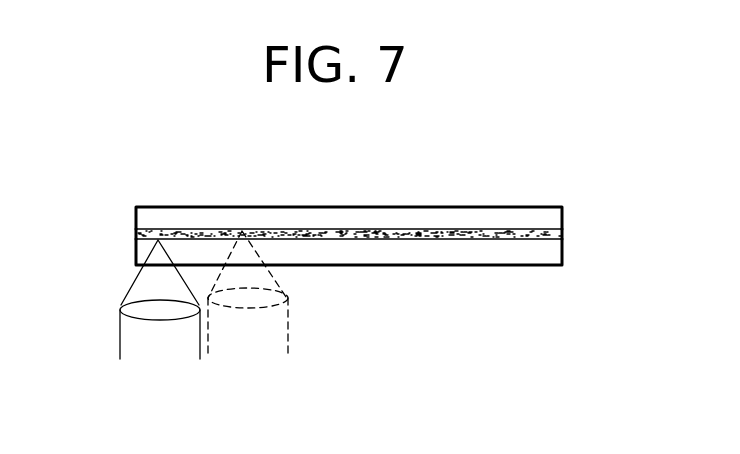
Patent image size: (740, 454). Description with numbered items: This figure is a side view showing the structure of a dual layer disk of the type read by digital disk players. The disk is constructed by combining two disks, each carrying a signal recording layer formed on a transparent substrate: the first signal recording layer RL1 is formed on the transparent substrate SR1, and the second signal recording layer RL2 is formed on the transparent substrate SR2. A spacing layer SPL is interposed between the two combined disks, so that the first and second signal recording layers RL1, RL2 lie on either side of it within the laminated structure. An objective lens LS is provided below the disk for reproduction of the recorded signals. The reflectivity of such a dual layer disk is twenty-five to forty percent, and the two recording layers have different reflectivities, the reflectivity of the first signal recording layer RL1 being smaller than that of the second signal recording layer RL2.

The transparent substrate SR2 is at (478, 212).
The second signal recording layer RL2 is at (528, 228).
The spacing layer SPL is at (556, 233).
The first signal recording layer RL1 is at (540, 242).
The transparent substrate SR1 is at (465, 253).
The objective lens LS is at (137, 307).